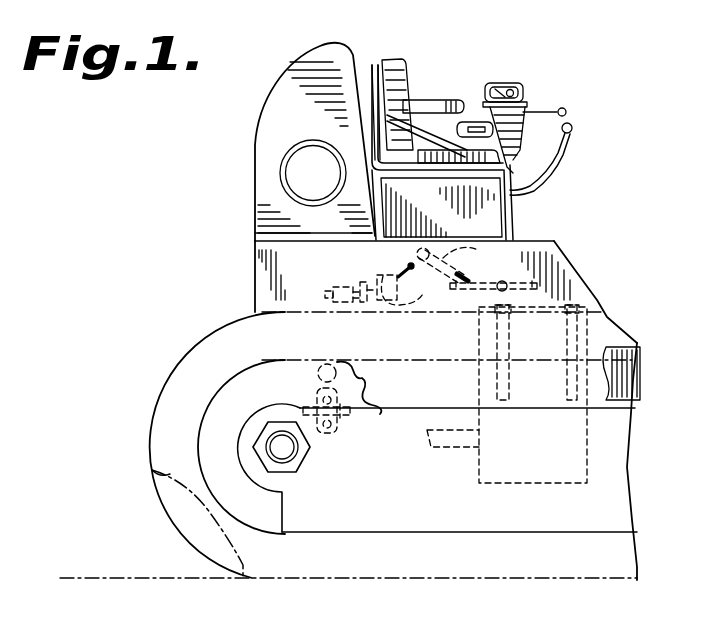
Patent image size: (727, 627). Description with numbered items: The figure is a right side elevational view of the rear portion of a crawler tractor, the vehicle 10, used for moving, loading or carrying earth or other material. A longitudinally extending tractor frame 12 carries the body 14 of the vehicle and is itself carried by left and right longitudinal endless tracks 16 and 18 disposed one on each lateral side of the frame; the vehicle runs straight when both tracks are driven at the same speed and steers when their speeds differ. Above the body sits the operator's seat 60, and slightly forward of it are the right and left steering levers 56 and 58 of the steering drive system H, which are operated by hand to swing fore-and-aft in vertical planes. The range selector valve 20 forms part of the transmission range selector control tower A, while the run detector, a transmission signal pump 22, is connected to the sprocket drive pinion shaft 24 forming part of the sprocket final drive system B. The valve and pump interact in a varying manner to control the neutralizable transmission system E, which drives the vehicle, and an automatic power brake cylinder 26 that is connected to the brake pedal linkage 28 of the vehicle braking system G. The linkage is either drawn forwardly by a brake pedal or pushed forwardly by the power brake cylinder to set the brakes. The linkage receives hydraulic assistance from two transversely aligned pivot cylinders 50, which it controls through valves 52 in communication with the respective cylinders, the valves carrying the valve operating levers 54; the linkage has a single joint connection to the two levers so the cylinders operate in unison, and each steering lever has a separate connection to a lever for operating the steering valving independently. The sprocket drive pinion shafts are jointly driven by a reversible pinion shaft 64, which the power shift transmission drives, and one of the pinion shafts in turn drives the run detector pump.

The vehicle 10 is at (296, 62).
The tractor frame 12 is at (624, 345).
The body 14 is at (262, 262).
The left longitudinal endless track 16 is at (160, 392).
The right longitudinal endless track 18 is at (182, 514).
The range selector valve 20 is at (497, 86).
The transmission signal pump 22 is at (315, 395).
The sprocket drive pinion shaft 24 is at (327, 362).
The automatic power brake cylinder 26 is at (476, 269).
The brake pedal linkage 28 is at (462, 290).
The pivot cylinders 50 is at (350, 290).
The valves 52 is at (409, 285).
The valve operating levers 54 is at (405, 275).
The right steering lever 56 is at (556, 162).
The left steering lever 58 is at (571, 124).
The operator's seat 60 is at (404, 68).
The reversible pinion shaft 64 is at (458, 450).
The transmission range selector control tower A is at (528, 127).
The sprocket final drive system B is at (366, 388).
The neutralizable transmission system E is at (558, 490).
The vehicle braking system G is at (510, 271).
The steering drive system H is at (574, 110).